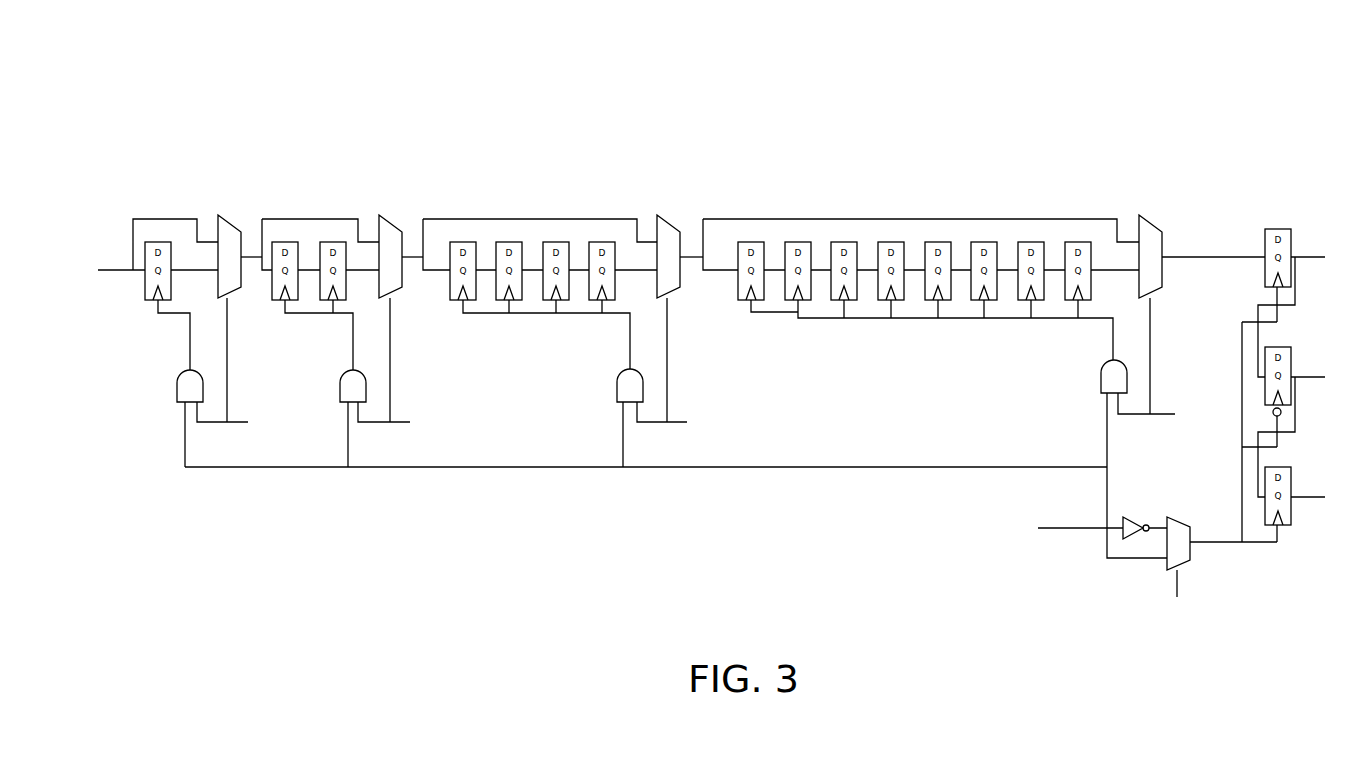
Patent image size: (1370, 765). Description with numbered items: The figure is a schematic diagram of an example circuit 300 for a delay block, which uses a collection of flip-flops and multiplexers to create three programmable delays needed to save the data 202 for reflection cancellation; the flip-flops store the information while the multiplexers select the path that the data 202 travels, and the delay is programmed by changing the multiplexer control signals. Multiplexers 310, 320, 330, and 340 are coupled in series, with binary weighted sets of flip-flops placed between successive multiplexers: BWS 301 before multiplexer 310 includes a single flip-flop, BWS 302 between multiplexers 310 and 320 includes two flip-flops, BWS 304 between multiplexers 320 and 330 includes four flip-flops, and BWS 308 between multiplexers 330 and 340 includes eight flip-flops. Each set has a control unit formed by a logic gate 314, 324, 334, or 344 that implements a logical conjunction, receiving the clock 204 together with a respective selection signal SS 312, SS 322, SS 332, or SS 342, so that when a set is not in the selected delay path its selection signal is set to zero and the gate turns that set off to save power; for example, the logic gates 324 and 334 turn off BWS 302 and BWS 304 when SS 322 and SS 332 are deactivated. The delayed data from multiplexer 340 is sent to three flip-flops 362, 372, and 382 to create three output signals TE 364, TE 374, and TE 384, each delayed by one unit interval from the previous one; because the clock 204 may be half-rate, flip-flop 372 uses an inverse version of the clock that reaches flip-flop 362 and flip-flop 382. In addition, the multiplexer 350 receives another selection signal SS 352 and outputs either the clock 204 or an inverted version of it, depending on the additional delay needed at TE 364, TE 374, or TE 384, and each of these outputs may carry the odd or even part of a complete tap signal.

The circuit 300 is at (663, 59).
The data 202 is at (122, 328).
The clock 204 is at (1016, 558).
The BWS 301 is at (203, 188).
The BWS 302 is at (348, 188).
The BWS 304 is at (615, 188).
The BWS 308 is at (1092, 188).
The multiplexer 310 is at (218, 215).
The multiplexer 320 is at (379, 215).
The multiplexer 330 is at (657, 215).
The multiplexer 340 is at (1139, 215).
The multiplexer 350 is at (1167, 517).
The SS 312 is at (290, 431).
The SS 322 is at (453, 431).
The SS 332 is at (730, 440).
The SS 342 is at (1213, 438).
The SS 352 is at (1191, 657).
The logic gate 314 is at (177, 385).
The logic gate 324 is at (340, 385).
The logic gate 334 is at (617, 383).
The logic gate 344 is at (1101, 377).
The flip-flop 362 is at (1270, 229).
The flip-flop 372 is at (1270, 347).
The flip-flop 382 is at (1270, 467).
The TE 364 is at (1368, 281).
The TE 374 is at (1368, 400).
The TE 384 is at (1368, 516).